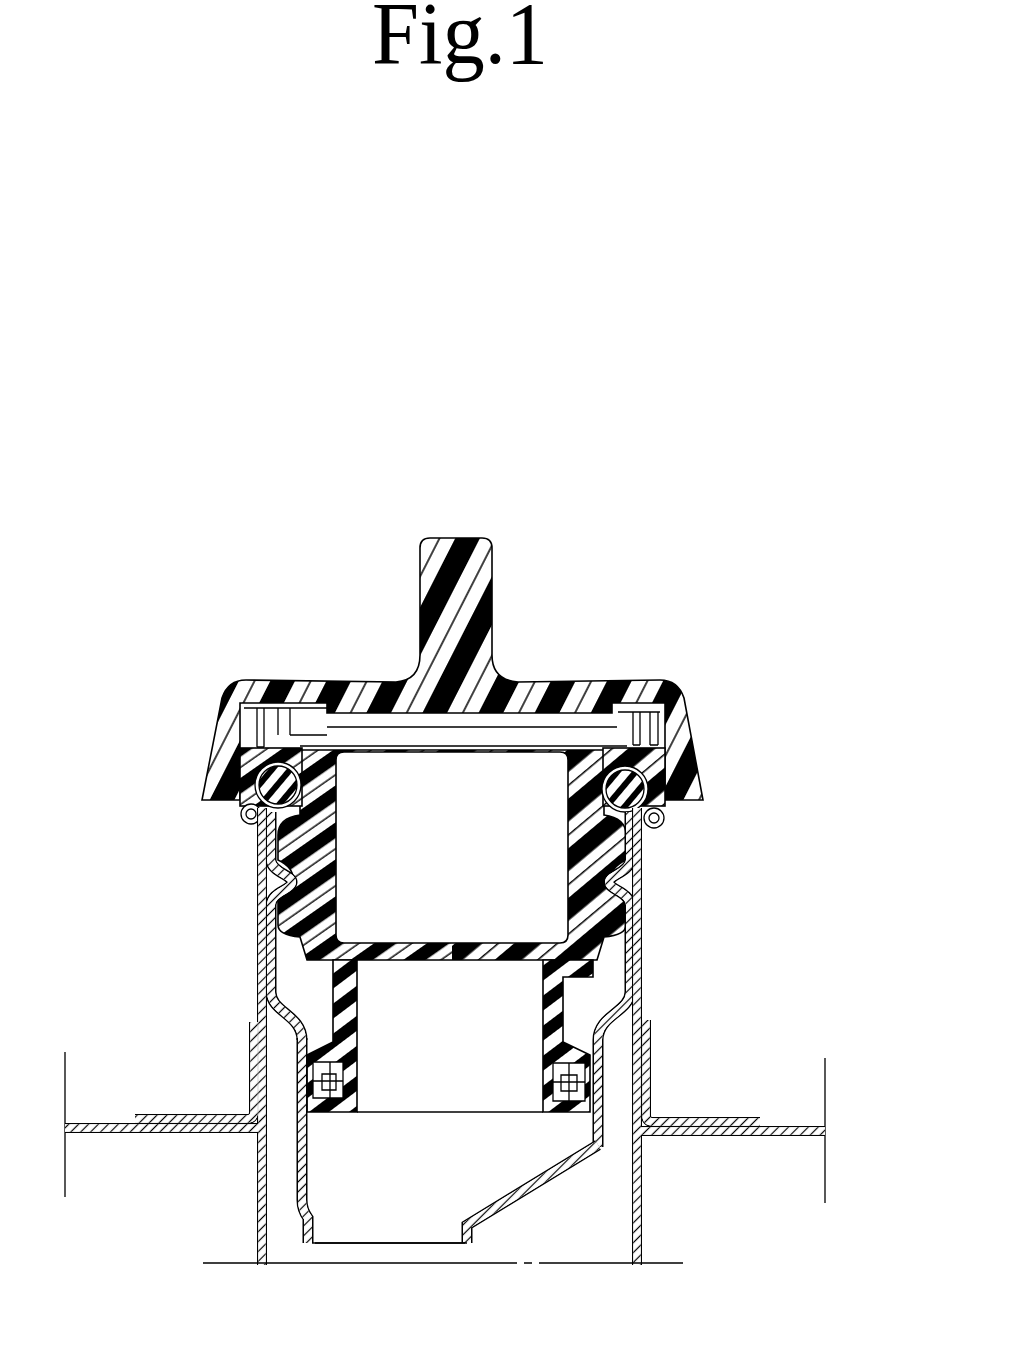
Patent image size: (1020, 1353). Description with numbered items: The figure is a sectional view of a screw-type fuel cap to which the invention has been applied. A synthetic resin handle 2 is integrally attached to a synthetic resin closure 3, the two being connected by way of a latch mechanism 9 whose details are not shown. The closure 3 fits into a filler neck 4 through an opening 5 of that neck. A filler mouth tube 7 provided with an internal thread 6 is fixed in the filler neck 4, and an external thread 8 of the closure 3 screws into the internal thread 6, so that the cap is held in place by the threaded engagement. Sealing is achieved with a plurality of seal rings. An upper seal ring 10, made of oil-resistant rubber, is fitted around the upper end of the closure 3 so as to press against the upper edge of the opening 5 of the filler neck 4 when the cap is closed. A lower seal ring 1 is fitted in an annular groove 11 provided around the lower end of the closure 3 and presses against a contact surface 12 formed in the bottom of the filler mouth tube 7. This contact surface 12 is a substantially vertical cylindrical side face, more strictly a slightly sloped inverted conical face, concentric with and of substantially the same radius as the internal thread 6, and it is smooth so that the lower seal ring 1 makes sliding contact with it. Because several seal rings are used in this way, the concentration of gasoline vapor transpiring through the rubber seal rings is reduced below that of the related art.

The lower seal ring 1 is at (337, 1077).
The handle 2 is at (362, 680).
The closure 3 is at (466, 891).
The filler neck 4 is at (258, 1227).
The opening 5 is at (241, 813).
The internal thread 6 is at (270, 877).
The filler mouth tube 7 is at (398, 1189).
The external thread 8 is at (608, 872).
The latch mechanism 9 is at (640, 722).
The upper seal ring 10 is at (273, 788).
The annular groove 11 is at (332, 1075).
The contact surface 12 is at (302, 1123).